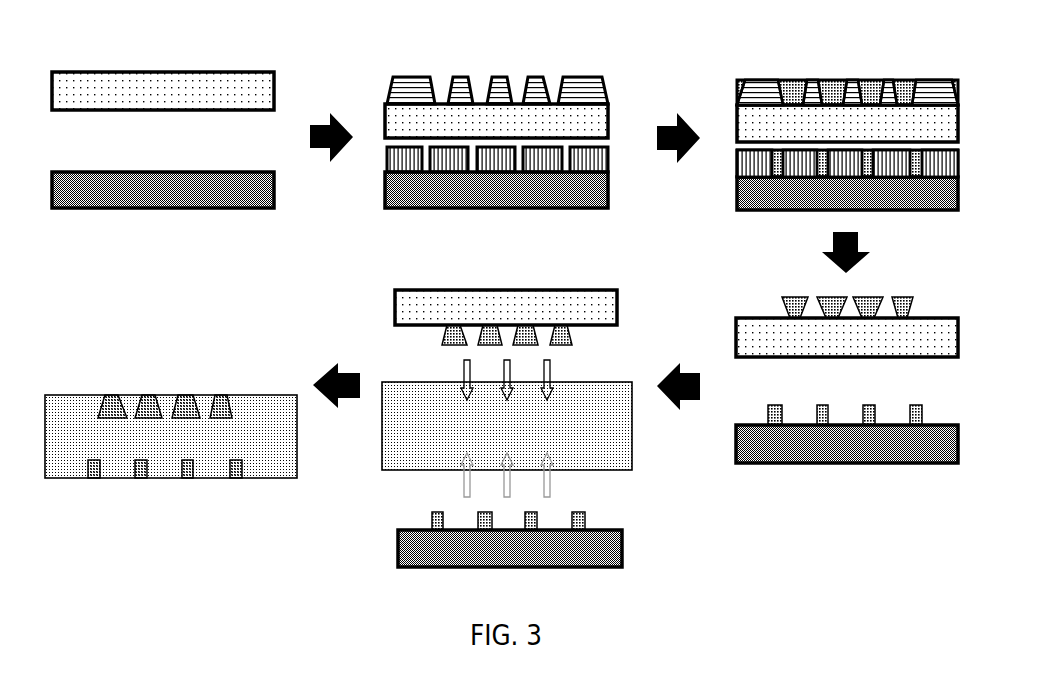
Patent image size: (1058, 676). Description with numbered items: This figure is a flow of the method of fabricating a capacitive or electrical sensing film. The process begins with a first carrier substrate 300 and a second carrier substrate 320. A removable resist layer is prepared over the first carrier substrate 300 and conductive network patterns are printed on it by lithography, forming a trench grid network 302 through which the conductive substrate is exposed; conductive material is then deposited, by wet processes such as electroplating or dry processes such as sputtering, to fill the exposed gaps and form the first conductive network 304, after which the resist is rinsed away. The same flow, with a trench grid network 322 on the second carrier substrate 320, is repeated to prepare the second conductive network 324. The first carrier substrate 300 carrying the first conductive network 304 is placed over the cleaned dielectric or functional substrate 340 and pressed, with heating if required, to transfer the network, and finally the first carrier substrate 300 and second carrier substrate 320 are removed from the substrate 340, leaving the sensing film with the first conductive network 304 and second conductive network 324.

The first carrier substrate 300 is at (175, 95).
The second carrier substrate 320 is at (166, 184).
The trench grid network 302 is at (579, 86).
The trench grid network 322 is at (595, 164).
The first conductive network 304 is at (869, 86).
The second conductive network 324 is at (920, 170).
The dielectric or functional substrate 340 is at (607, 405).